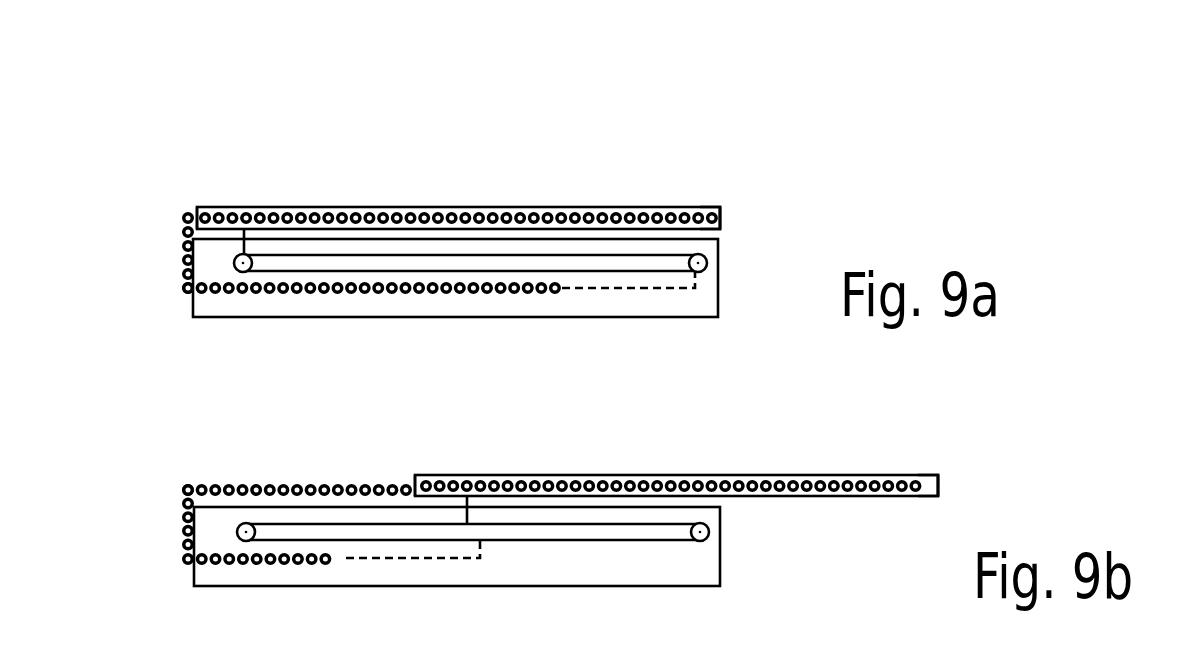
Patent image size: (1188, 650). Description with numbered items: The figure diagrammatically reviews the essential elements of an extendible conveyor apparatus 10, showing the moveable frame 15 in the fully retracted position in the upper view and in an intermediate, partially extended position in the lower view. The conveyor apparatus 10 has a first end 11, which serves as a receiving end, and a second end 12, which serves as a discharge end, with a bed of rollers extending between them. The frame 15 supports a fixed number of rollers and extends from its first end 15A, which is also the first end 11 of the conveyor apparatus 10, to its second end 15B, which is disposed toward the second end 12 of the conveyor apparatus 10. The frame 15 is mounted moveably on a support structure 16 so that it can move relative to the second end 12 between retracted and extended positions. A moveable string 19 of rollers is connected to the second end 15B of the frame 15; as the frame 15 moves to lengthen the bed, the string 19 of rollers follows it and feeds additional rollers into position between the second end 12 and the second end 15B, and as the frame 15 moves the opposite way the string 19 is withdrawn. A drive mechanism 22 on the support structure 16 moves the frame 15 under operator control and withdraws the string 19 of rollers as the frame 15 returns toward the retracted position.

In FIG. 9A, the conveyor apparatus 10 is at (224, 160).
In FIG. 9B, the conveyor apparatus 10 is at (224, 459).
In FIG. 9A, the first end 11 is at (736, 215).
In FIG. 9B, the first end 11 is at (953, 483).
In FIG. 9A, the second end 12 is at (170, 216).
In FIG. 9B, the second end 12 is at (170, 490).
In FIG. 9A, the moveable frame 15 is at (448, 207).
In FIG. 9B, the moveable frame 15 is at (672, 475).
In FIG. 9A, the first end of the frame 15A is at (703, 207).
In FIG. 9B, the first end of the frame 15A is at (923, 473).
In FIG. 9A, the second end of the frame 15B is at (207, 208).
In FIG. 9B, the second end of the frame 15B is at (428, 475).
In FIG. 9A, the support structure 16 is at (718, 284).
In FIG. 9B, the support structure 16 is at (720, 550).
In FIG. 9A, the string of rollers 19 is at (295, 292).
In FIG. 9B, the string of rollers 19 is at (297, 562).
In FIG. 9A, the drive mechanism 22 is at (592, 276).
In FIG. 9B, the drive mechanism 22 is at (593, 545).